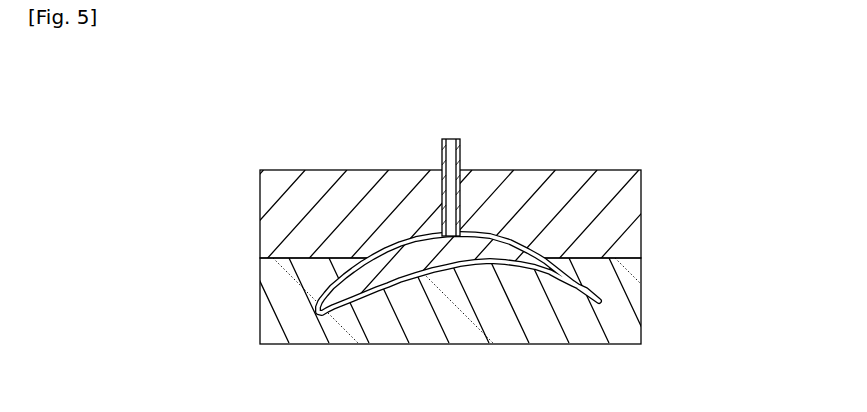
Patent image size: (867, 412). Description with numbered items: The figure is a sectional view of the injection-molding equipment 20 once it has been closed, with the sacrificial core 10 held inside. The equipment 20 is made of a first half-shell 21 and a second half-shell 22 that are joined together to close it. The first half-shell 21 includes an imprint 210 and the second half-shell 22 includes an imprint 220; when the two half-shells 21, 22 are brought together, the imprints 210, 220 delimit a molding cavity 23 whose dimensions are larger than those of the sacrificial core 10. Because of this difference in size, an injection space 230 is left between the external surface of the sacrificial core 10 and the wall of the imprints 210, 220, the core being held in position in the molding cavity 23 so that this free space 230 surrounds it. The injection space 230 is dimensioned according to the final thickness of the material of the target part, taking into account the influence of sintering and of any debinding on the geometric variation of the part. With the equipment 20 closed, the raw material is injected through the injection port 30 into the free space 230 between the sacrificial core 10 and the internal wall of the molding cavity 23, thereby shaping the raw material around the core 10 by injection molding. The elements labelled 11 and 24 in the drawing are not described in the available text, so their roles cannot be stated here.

The sacrificial core 10 is at (391, 273).
The blade interior / core 11 is at (407, 262).
The injection-molding equipment 20 is at (417, 221).
The first half-shell 21 is at (628, 303).
The second half-shell 22 is at (628, 217).
The molding cavity 23 is at (573, 292).
The injection tube / gate 24 is at (462, 148).
The injection port 30 is at (450, 128).
The imprint 210 is at (493, 270).
The imprint 220 is at (525, 237).
The injection space 230 is at (385, 245).